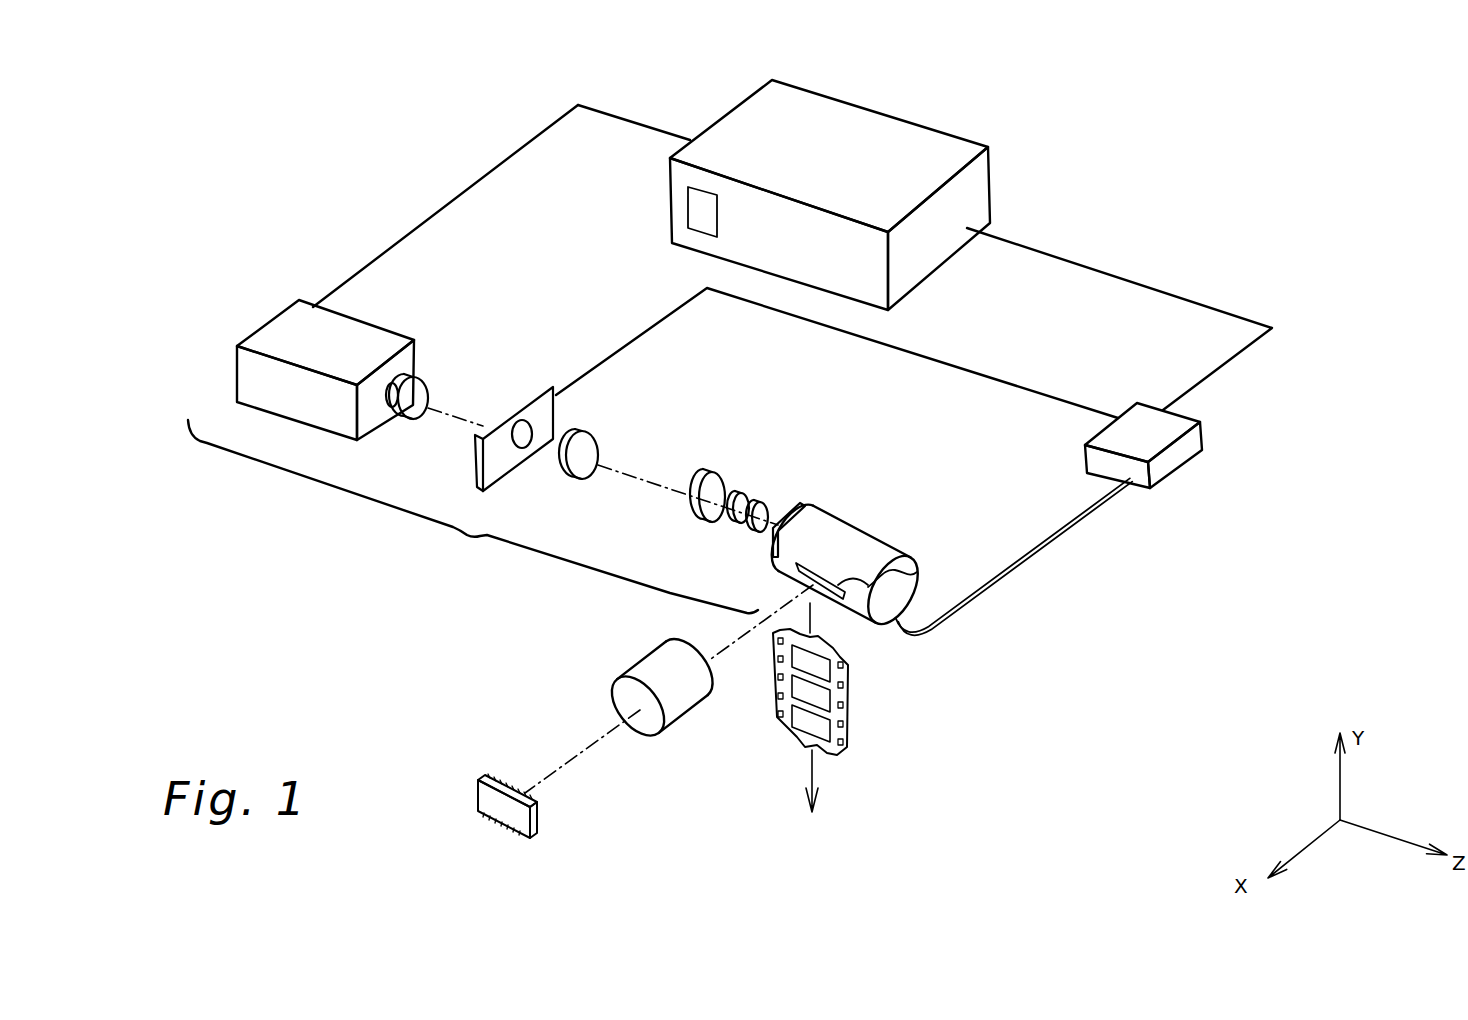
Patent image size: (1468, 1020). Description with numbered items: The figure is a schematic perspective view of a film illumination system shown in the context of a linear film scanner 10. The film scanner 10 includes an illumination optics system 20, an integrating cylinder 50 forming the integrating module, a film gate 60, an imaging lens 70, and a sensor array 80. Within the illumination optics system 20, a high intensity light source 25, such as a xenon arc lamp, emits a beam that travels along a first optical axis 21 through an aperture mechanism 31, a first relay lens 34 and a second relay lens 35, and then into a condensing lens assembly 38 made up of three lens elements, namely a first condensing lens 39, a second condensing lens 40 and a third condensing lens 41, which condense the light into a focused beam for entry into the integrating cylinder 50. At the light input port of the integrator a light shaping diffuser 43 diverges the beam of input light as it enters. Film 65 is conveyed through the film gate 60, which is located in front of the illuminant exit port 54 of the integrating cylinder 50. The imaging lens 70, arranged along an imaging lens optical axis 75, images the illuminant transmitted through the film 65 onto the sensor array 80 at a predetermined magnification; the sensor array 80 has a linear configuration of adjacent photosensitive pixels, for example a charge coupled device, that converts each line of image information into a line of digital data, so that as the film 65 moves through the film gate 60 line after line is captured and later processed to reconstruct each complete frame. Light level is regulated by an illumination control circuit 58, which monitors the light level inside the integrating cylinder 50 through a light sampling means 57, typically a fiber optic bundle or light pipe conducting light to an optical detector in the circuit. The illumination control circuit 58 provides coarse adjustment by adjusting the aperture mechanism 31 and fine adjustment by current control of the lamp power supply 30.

The film scanner 10 is at (332, 160).
The illumination optics system 20 is at (730, 359).
The first optical axis 21 is at (468, 420).
The light source 25 is at (287, 320).
The lamp power supply 30 is at (990, 185).
The aperture mechanism 31 is at (540, 385).
The first relay lens 34 is at (415, 400).
The second relay lens 35 is at (590, 440).
The condensing lens assembly 38 is at (749, 494).
The first condensing lens 39 is at (720, 480).
The second condensing lens 40 is at (748, 490).
The third condensing lens 41 is at (770, 503).
The light shaping diffuser 43 is at (802, 507).
The integrating cylinder 50 is at (869, 555).
The illuminant exit port 54 is at (910, 573).
The light sampling means 57 is at (1030, 570).
The illumination control circuit 58 is at (1177, 455).
The film gate 60 is at (881, 656).
The film 65 is at (852, 713).
The imaging lens 70 is at (647, 728).
The imaging lens optical axis 75 is at (573, 760).
The sensor array 80 is at (527, 837).